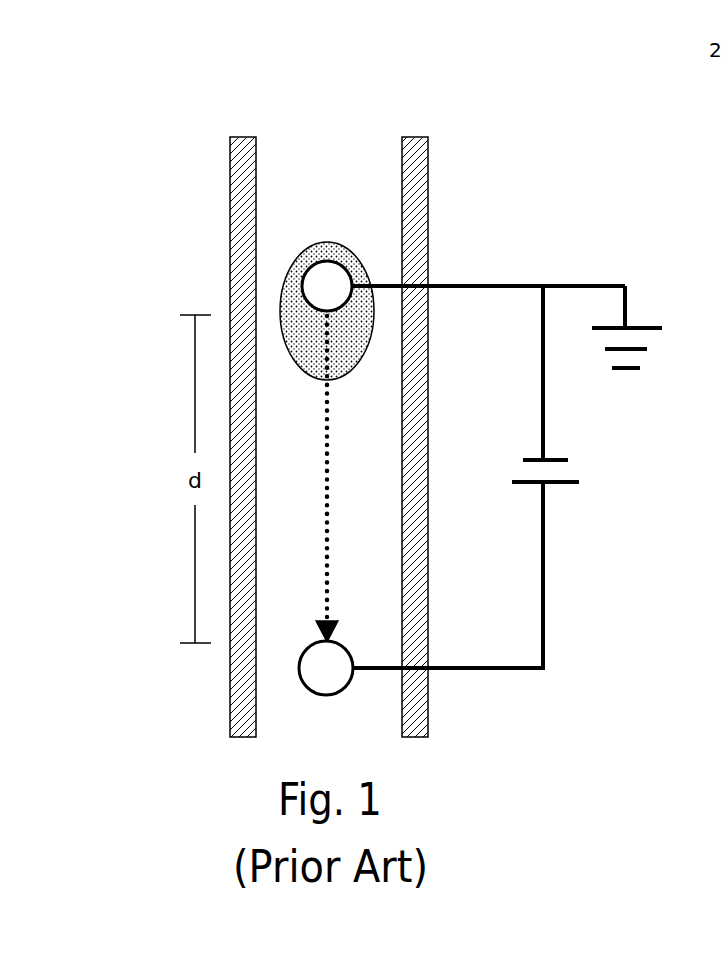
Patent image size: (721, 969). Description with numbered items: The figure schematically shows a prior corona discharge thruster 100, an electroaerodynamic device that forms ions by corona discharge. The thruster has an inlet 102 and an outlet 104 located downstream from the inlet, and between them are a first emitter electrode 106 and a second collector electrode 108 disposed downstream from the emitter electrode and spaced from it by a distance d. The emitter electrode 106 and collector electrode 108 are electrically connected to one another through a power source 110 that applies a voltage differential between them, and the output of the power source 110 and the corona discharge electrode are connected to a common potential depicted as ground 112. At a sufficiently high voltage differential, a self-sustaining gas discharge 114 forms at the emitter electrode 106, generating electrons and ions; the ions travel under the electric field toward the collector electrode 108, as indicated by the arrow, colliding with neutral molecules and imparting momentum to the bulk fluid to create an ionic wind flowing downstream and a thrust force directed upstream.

The corona discharge thruster 100 is at (193, 138).
The inlet 102 is at (288, 122).
The outlet 104 is at (283, 742).
The first emitter electrode 106 is at (326, 281).
The second collector electrode 108 is at (350, 680).
The power source 110 is at (553, 460).
The ground 112 is at (642, 327).
The self-sustaining gas discharge 114 is at (333, 243).